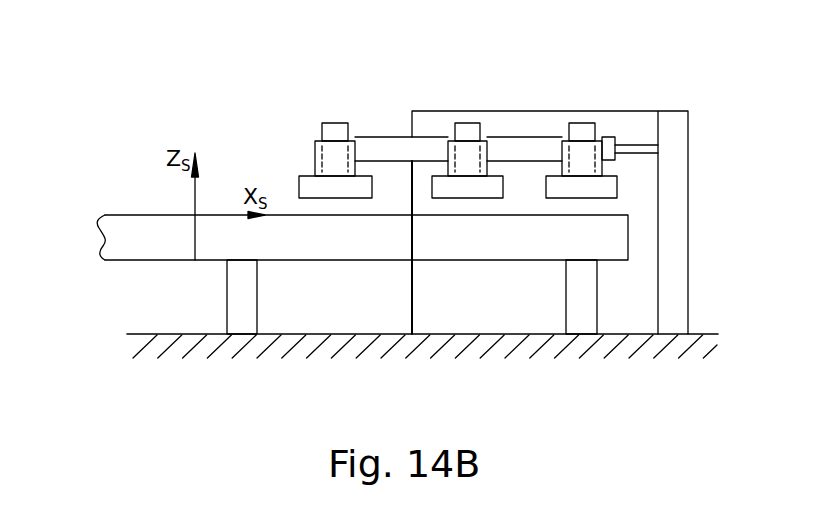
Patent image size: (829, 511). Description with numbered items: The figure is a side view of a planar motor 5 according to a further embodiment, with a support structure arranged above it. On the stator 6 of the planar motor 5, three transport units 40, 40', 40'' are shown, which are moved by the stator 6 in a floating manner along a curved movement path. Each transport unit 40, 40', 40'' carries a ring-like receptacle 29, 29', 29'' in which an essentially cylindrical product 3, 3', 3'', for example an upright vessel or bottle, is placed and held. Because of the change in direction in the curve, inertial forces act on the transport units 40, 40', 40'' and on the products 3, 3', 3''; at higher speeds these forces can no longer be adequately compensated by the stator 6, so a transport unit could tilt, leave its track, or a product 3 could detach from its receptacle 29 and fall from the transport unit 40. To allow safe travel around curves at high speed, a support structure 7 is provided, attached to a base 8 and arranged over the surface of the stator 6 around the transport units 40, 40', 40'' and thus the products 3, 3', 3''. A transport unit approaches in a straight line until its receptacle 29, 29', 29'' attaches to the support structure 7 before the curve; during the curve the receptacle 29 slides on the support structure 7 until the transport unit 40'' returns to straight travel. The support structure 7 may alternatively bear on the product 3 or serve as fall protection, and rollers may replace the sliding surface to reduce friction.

The planar motor 5 is at (135, 112).
The stator 6 is at (303, 233).
The support structure 7 is at (393, 149).
The base 8 is at (670, 212).
The product 3 is at (316, 90).
The product 3' is at (469, 90).
The product 3'' is at (567, 90).
The receptacle 29 is at (335, 108).
The receptacle 29' is at (447, 108).
The receptacle 29'' is at (603, 108).
The transport unit 40 is at (310, 157).
The transport unit 40' is at (463, 234).
The transport unit 40'' is at (556, 234).